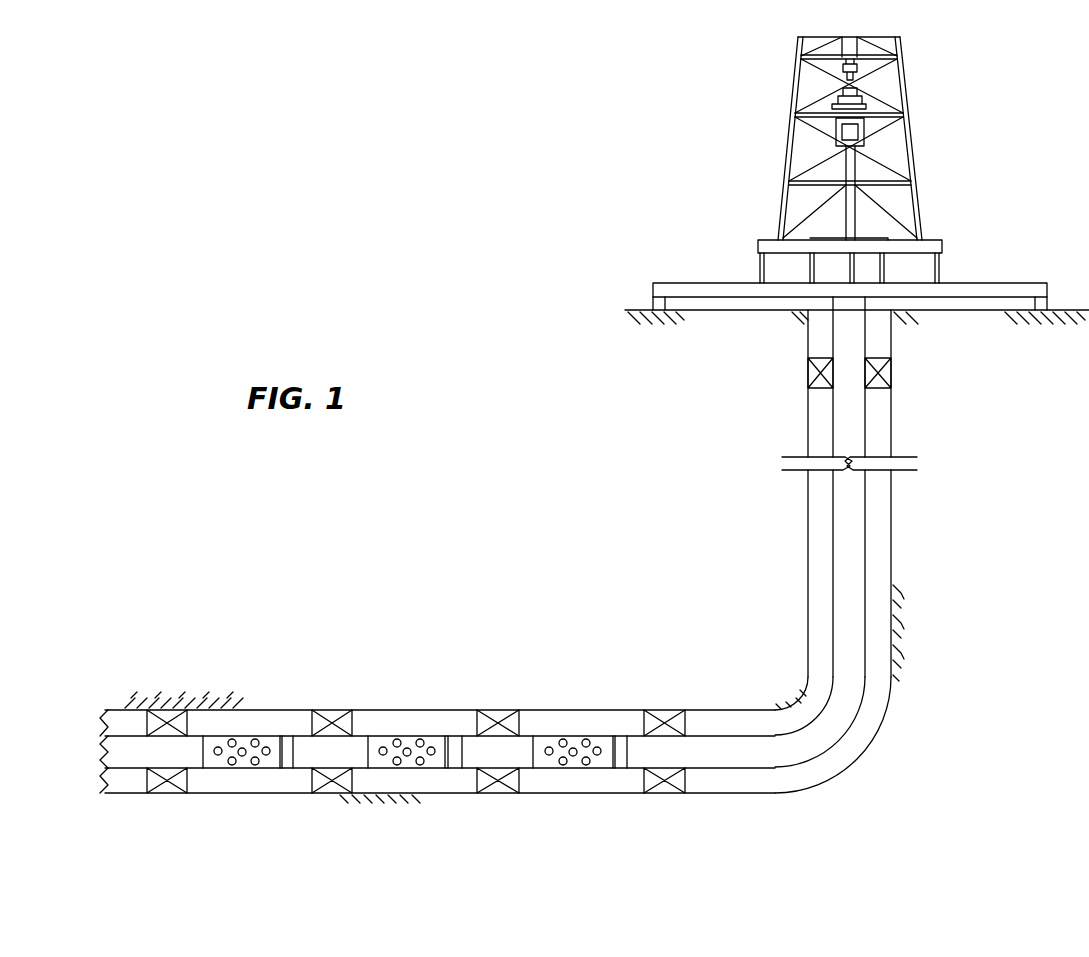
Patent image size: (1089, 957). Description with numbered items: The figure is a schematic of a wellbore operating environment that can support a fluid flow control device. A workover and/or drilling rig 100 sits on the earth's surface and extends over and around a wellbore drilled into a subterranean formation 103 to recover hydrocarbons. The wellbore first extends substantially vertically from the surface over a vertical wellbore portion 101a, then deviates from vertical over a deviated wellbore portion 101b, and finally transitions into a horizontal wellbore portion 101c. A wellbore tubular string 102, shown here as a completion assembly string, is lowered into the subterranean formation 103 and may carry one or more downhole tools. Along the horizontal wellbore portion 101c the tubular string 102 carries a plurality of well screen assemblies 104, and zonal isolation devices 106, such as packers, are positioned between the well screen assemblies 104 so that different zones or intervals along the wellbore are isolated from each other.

The workover and/or drilling rig 100 is at (948, 110).
The vertical wellbore portion 101a is at (806, 398).
The deviated wellbore portion 101b is at (792, 688).
The horizontal wellbore portion 101c is at (597, 708).
The wellbore tubular string 102 is at (868, 408).
The subterranean formation 103 is at (435, 691).
The well screen assembly 104 is at (240, 770).
The zonal isolation device 106 is at (165, 795).